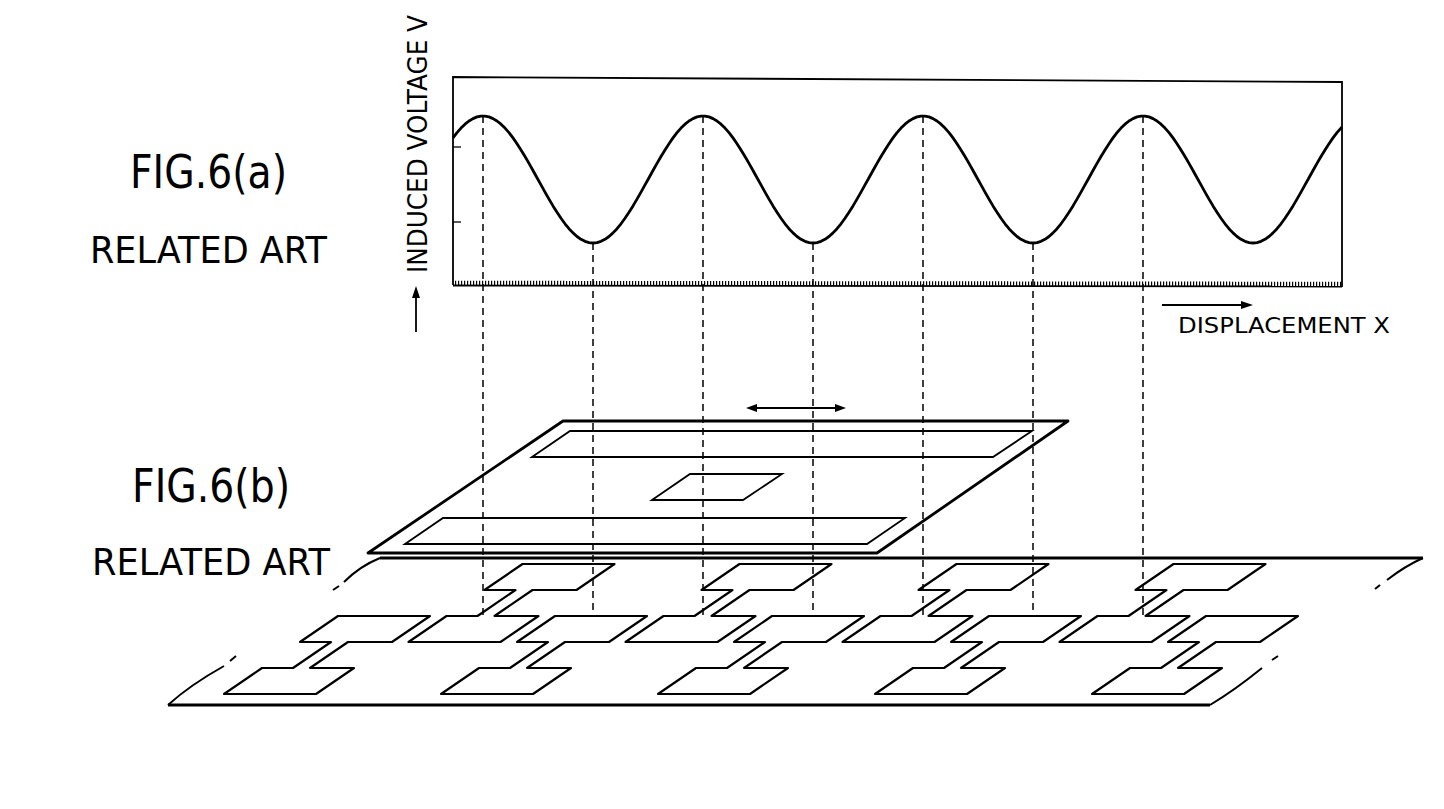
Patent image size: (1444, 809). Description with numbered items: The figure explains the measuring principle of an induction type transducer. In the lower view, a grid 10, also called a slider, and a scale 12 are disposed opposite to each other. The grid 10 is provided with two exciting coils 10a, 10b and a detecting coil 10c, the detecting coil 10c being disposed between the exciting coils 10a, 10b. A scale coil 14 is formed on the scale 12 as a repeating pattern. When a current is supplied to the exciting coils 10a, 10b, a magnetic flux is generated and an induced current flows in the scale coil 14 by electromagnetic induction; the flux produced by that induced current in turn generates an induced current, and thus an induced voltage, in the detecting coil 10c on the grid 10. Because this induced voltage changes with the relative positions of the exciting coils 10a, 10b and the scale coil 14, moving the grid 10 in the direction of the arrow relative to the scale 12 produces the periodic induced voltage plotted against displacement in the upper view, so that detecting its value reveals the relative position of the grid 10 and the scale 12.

The grid 10 is at (449, 497).
The exciting coil 10a is at (958, 421).
The exciting coil 10b is at (888, 531).
The detecting coil 10c is at (766, 485).
The scale 12 is at (1198, 558).
The scale coil 14 is at (753, 682).